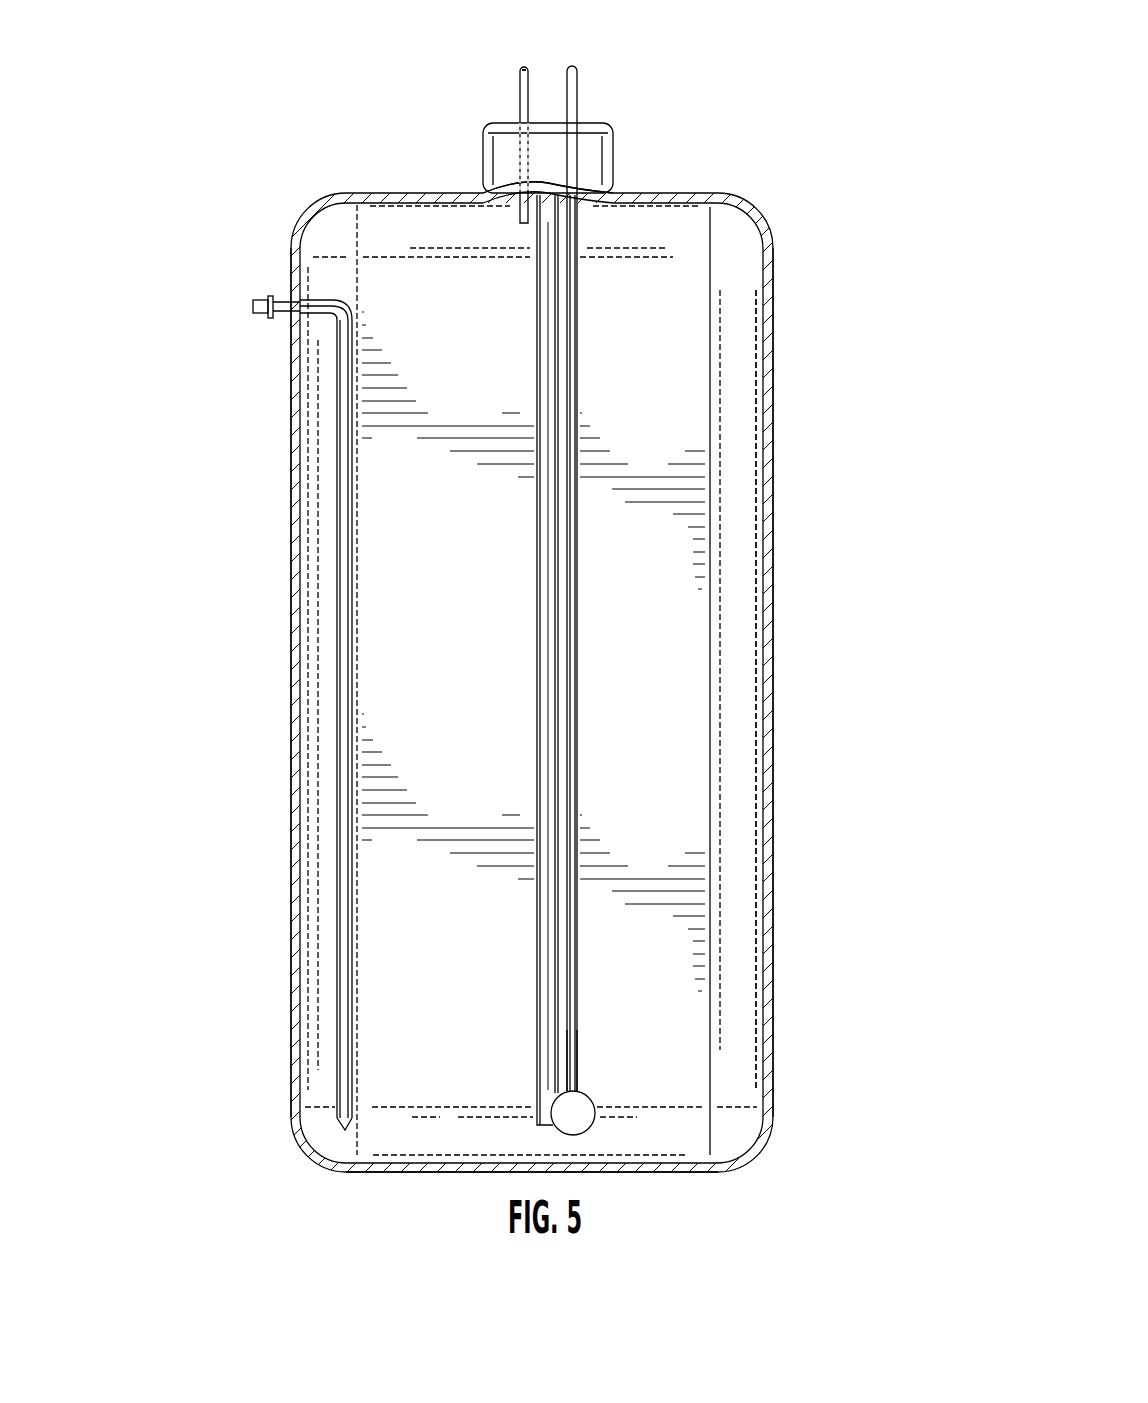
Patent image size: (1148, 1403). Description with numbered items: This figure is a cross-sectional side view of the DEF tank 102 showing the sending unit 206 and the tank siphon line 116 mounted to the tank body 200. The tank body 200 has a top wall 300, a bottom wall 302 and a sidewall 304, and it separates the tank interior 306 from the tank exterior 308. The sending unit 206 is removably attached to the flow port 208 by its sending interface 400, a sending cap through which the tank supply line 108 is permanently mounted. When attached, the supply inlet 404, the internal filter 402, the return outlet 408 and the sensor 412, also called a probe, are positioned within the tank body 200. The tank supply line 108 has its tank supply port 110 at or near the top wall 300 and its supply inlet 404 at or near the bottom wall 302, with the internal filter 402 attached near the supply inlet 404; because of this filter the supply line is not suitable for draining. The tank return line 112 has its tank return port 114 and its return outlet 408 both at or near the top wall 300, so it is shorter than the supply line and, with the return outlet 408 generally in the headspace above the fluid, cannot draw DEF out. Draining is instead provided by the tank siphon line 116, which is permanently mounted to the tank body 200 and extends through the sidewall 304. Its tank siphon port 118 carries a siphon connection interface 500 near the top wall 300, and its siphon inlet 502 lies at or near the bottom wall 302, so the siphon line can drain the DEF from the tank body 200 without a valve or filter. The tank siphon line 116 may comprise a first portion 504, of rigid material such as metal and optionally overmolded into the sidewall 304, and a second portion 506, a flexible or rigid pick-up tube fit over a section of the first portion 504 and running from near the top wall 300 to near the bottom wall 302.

The DEF tank 102 is at (739, 78).
The tank supply line 108 is at (572, 65).
The tank supply port 110 is at (615, 546).
The tank return line 112 is at (523, 65).
The tank return port 114 is at (473, 156).
The tank siphon line 116 is at (268, 318).
The tank siphon port 118 is at (268, 298).
The tank body 200 is at (574, 684).
The sending unit 206 is at (597, 120).
The flow port 208 is at (615, 190).
The top wall 300 is at (574, 684).
The bottom wall 302 is at (665, 1172).
The sidewall 304 is at (292, 690).
The tank interior 306 is at (736, 562).
The tank exterior 308 is at (771, 650).
The sending interface 400 is at (566, 138).
The internal filter 402 is at (585, 1090).
The supply inlet 404 is at (577, 1113).
The return outlet 408 is at (522, 225).
The sensor 412 is at (567, 665).
The siphon connection interface 500 is at (285, 634).
The siphon inlet 502 is at (352, 1128).
The first portion 504 is at (290, 296).
The second portion 506 is at (327, 715).